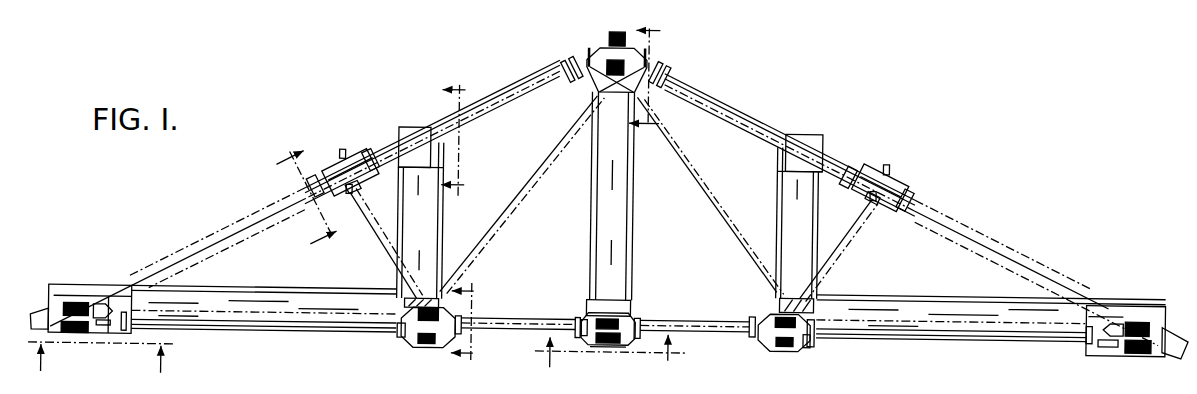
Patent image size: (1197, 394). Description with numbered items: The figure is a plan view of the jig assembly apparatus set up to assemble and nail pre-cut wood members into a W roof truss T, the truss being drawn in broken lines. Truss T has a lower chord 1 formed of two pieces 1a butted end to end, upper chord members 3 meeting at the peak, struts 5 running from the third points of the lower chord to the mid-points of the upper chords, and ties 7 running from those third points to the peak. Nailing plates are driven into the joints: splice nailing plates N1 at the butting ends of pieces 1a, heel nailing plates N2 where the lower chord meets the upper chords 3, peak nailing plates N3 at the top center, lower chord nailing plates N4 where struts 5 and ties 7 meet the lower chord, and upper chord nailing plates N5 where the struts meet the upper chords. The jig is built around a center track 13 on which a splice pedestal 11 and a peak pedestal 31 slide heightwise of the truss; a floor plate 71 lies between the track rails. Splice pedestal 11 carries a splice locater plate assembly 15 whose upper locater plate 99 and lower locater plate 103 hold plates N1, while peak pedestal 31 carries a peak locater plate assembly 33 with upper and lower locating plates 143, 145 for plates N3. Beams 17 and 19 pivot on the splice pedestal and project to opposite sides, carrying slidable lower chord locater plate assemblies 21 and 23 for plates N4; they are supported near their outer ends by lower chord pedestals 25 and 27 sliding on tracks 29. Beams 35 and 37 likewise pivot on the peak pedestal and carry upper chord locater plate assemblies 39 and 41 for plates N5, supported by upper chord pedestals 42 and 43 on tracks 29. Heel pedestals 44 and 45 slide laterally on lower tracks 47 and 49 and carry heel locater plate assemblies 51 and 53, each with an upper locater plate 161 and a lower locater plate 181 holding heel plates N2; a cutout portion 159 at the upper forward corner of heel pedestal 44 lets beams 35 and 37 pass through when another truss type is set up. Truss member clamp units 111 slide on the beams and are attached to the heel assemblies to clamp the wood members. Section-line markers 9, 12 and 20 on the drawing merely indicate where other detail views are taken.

The roof truss T is at (236, 228).
The lower chord 1 is at (284, 314).
The lower chord member 1a is at (233, 319).
The upper chord member 3 is at (258, 231).
The strut 5 is at (376, 239).
The tie 7 is at (532, 184).
The section line 9- 9 is at (100, 362).
The splice pedestal 11 is at (614, 296).
The section line 12- 12 is at (463, 140).
The center track 13 is at (633, 218).
The splice locater plate assembly 15 is at (647, 300).
The beam 17 is at (525, 307).
The beam 19 is at (722, 320).
The section line 20- 20 is at (473, 323).
The lower chord locater plate assembly 21 is at (411, 341).
The lower chord locater plate assembly 23 is at (808, 345).
The lower chord pedestal 25 is at (413, 301).
The lower chord pedestal 27 is at (808, 294).
The track 29 is at (444, 224).
The peak pedestal 31 is at (646, 51).
The peak locater plate assembly 33 is at (571, 84).
The beam 35 is at (304, 193).
The beam 37 is at (752, 115).
The upper chord locater plate assembly 39 is at (363, 191).
The upper chord locater plate assembly 41 is at (882, 207).
The upper chord pedestal 42 is at (408, 130).
The upper chord pedestal 43 is at (806, 134).
The heel pedestal 44 is at (115, 292).
The heel pedestal 45 is at (1146, 293).
The lower track 47 is at (228, 336).
The lower track 49 is at (972, 336).
The heel locater plate assembly 51 is at (56, 309).
The heel locater plate assembly 53 is at (1154, 316).
The floor plate 71 is at (628, 184).
The upper locater plate 99 is at (603, 347).
The lower locater plate 103 is at (582, 325).
The truss member clamp unit 111 is at (128, 329).
The upper locating plate 143 is at (606, 36).
The lower locating plate 145 is at (611, 77).
The cutout portion 159 is at (126, 304).
The upper locater plate 161 is at (100, 337).
The lower locater plate 181 is at (65, 309).
The lower chord splice nailing plate N1 is at (588, 312).
The heel nailing plate N2 is at (79, 331).
The peak nailing plate N3 is at (594, 50).
The lower chord nailing plate N4 is at (427, 325).
The upper chord nailing plate N5 is at (341, 164).